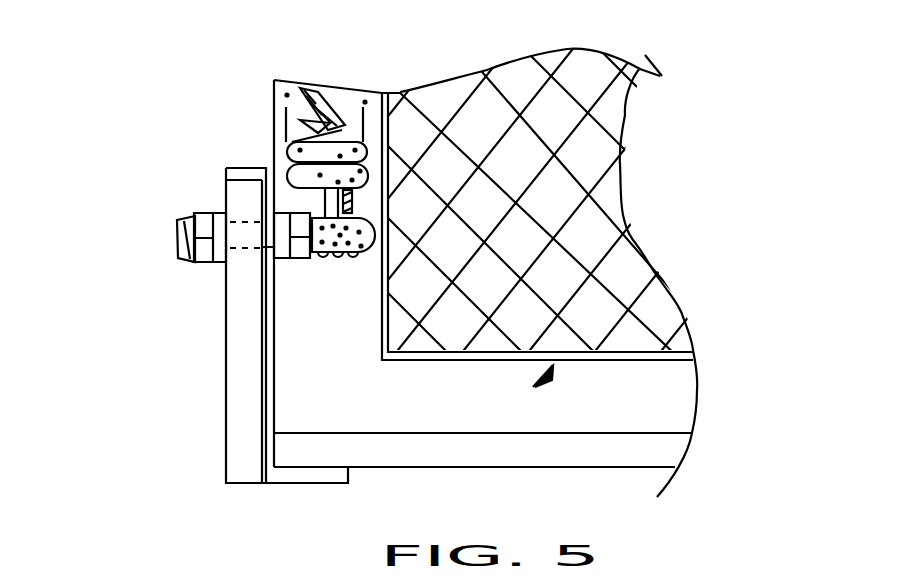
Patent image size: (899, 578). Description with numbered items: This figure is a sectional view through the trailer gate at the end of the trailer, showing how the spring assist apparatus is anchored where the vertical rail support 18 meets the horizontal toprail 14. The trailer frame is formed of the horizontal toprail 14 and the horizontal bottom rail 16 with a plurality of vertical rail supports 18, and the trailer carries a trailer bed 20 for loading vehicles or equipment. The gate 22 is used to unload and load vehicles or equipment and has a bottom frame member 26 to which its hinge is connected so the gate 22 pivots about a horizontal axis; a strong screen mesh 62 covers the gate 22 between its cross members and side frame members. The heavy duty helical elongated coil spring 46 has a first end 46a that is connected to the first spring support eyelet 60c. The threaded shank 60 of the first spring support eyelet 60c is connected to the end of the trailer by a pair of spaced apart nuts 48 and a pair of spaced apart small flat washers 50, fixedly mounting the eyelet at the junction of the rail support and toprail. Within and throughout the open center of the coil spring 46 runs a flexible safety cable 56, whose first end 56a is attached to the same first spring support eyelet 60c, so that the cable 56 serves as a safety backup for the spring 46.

The horizontal toprail 14 is at (224, 168).
The horizontal bottom rail 16 is at (272, 448).
The vertical rail support 18 is at (240, 362).
The trailer bed 20 is at (657, 450).
The gate 22 is at (580, 350).
The bottom frame member 26 is at (667, 377).
The helical elongated coil spring 46 is at (300, 148).
The first end of coil spring 46a is at (327, 208).
The nuts 48 is at (203, 251).
The small flat washers 50 is at (218, 215).
The flexible safety cable 56 is at (305, 92).
The first end of cable 56a is at (352, 201).
The threaded shank 60 is at (178, 224).
The first spring support eyelet 60c is at (375, 235).
The screen mesh 62 is at (587, 115).